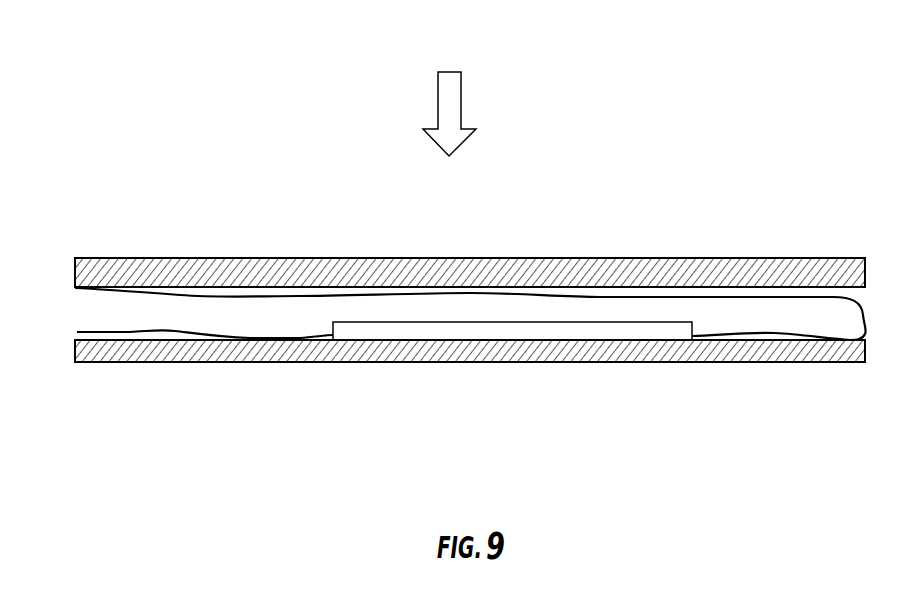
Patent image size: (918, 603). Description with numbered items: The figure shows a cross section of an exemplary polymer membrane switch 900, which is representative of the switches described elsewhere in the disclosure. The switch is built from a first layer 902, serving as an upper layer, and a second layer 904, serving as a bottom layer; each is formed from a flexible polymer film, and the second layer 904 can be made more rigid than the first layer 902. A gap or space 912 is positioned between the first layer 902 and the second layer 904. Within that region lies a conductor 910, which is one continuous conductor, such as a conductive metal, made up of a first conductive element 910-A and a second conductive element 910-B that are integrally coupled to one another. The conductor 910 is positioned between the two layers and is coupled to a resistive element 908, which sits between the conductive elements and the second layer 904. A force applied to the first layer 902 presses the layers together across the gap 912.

The polymer membrane switch 900 is at (443, 233).
The first layer 902 is at (148, 268).
The second layer 904 is at (758, 370).
The resistive element 908 is at (441, 333).
The conductor 910 is at (443, 319).
The first conductive element 910-A is at (655, 294).
The second conductive element 910-B is at (135, 334).
The gap or space 912 is at (244, 328).